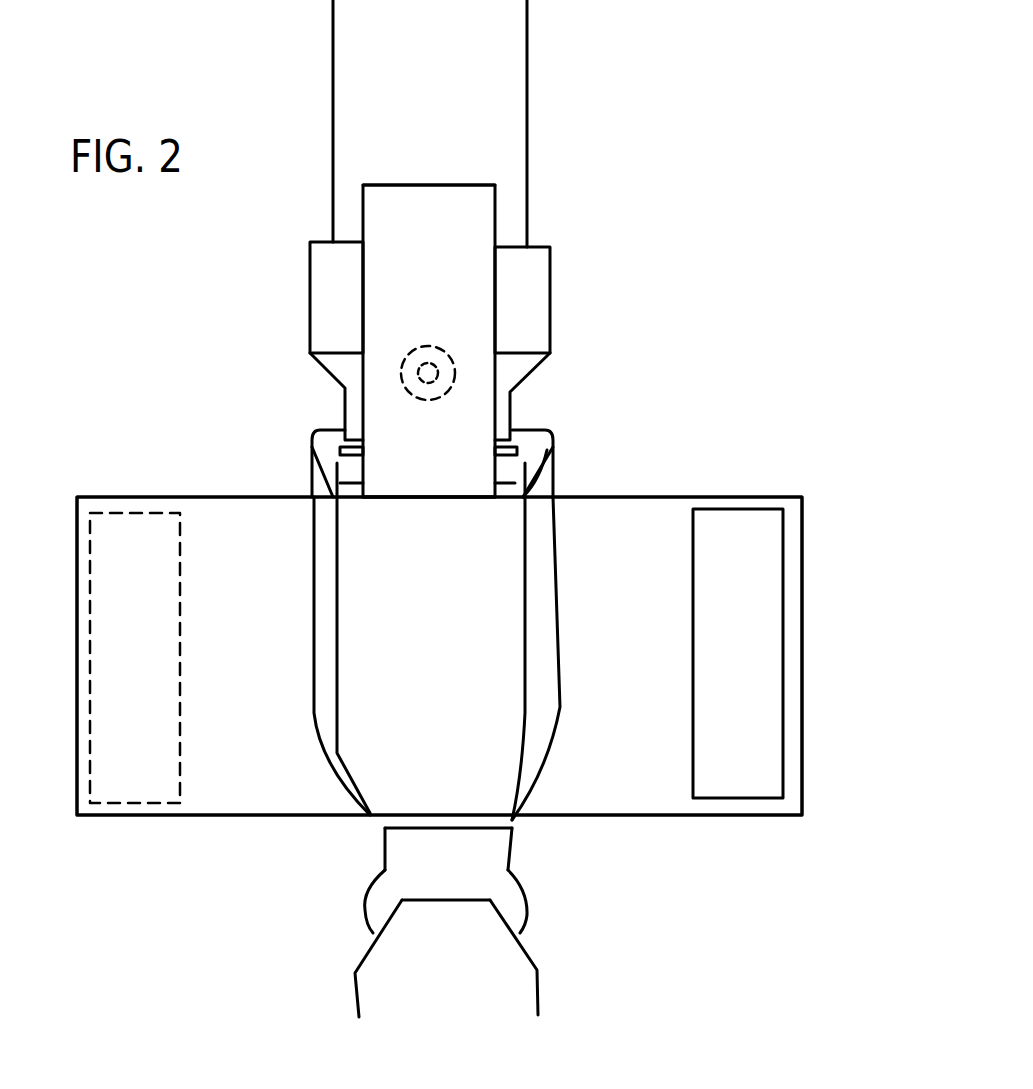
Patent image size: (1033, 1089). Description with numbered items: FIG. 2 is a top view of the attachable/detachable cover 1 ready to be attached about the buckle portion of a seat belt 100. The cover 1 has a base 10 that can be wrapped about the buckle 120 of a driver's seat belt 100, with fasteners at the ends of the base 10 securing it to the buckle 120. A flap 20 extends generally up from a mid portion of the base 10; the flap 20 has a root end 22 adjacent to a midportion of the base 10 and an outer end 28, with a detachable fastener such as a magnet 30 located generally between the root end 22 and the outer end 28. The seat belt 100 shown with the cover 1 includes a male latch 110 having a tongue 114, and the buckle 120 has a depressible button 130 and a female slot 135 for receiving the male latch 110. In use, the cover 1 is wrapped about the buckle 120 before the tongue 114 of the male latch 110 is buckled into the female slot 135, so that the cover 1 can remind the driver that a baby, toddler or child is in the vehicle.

The attachable/detachable cover 1 is at (142, 433).
The base of cover 10 is at (233, 795).
The flap 20 is at (453, 233).
The root end of flap 22 is at (447, 497).
The outer end of flap 28 is at (438, 185).
The detachable fastener 30 is at (425, 390).
The seat belt 100 is at (610, 40).
The male latch 110 is at (528, 287).
The tongue 114 is at (507, 380).
The buckle 120 is at (512, 828).
The depressible button 130 is at (345, 473).
The female slot 135 is at (547, 427).